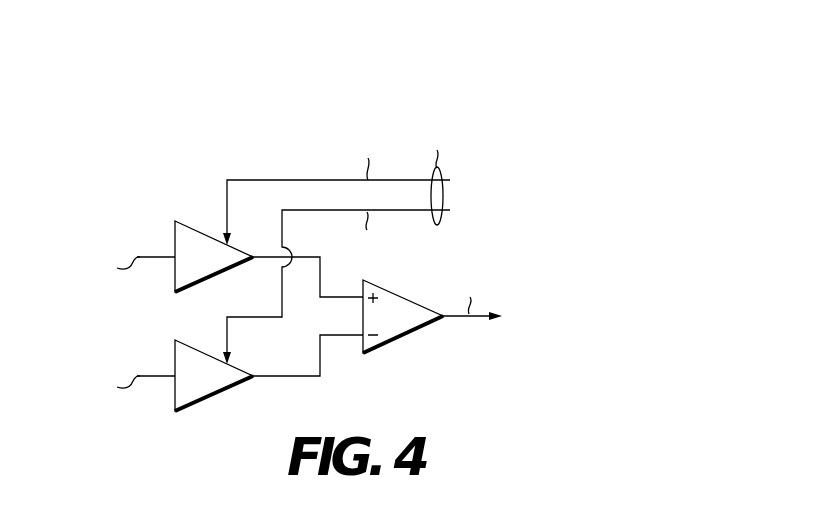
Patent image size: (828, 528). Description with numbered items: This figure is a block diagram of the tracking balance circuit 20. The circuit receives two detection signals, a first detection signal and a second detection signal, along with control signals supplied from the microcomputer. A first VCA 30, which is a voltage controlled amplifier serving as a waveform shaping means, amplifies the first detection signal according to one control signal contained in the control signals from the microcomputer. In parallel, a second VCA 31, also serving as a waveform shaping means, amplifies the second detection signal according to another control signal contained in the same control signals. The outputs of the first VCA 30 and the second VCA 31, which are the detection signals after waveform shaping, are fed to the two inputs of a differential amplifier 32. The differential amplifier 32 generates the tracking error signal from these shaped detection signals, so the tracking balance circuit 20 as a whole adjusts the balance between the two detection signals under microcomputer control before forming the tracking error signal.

The tracking balance circuit 20 is at (280, 134).
The first VCA 30 is at (229, 272).
The second VCA 31 is at (228, 392).
The differential amplifier 32 is at (408, 334).